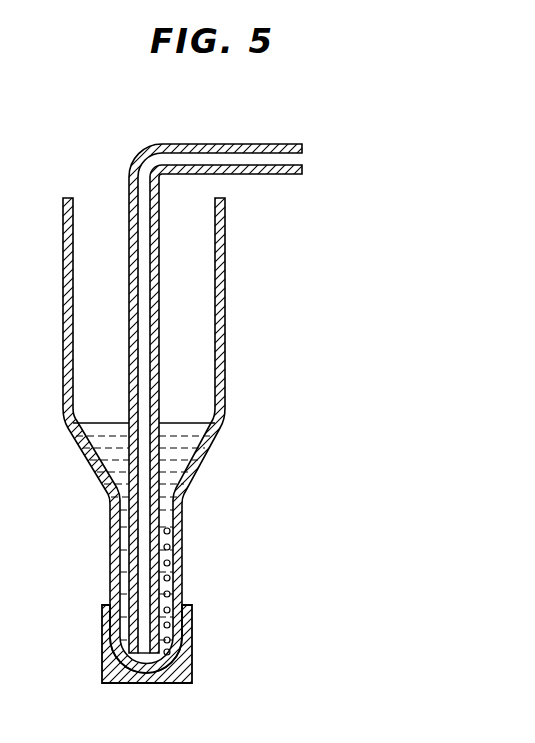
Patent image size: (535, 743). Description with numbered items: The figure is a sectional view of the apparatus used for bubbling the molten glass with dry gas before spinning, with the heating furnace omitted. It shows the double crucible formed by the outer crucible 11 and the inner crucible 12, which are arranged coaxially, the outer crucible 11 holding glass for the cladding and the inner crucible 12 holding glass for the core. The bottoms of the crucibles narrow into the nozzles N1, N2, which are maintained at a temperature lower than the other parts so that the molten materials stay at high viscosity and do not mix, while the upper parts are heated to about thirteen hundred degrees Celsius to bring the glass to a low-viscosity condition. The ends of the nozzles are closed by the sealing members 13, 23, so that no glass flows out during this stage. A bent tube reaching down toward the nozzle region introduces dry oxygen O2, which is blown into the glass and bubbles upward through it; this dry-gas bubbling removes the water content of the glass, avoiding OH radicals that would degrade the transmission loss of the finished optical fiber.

The outer crucible 11 is at (194, 435).
The inner crucible 12 is at (225, 353).
The sealing member 13 is at (198, 644).
The sealing member 23 is at (184, 614).
The nozzle N1 is at (210, 671).
The nozzle N2 is at (160, 666).
The dry oxygen O2 is at (310, 158).